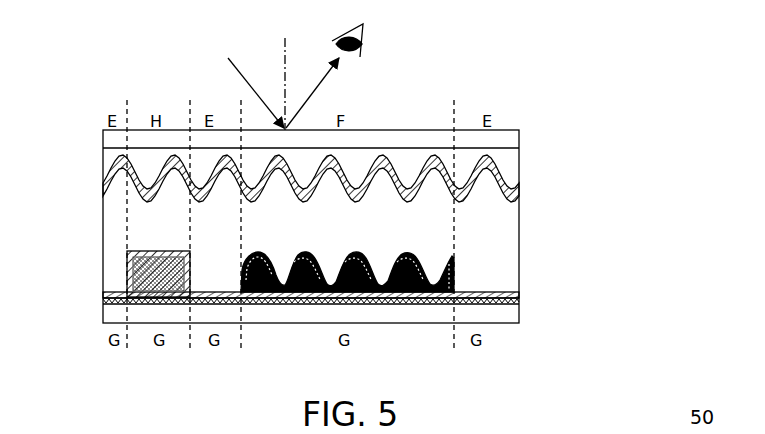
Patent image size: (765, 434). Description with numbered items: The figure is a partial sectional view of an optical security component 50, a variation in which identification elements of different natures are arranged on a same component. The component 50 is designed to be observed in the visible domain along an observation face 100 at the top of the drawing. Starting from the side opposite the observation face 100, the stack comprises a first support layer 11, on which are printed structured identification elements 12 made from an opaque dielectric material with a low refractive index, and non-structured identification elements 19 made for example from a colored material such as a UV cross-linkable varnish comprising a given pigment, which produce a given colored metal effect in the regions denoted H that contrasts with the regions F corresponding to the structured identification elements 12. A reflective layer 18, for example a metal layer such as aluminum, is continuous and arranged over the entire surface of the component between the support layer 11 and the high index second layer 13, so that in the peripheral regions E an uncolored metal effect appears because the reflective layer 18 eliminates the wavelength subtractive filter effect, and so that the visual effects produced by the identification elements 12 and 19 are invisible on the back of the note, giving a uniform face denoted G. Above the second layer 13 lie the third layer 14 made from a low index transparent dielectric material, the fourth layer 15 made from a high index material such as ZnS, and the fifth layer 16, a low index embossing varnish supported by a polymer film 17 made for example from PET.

The observation face 100 is at (400, 130).
The film 17 is at (508, 140).
The fifth layer 16 is at (508, 167).
The fourth layer 15 is at (519, 187).
The third layer 14 is at (510, 228).
The second layer 13 is at (520, 298).
The reflective layer 18 is at (258, 304).
The first support layer 11 is at (487, 312).
The identification elements 12 is at (401, 292).
The non-structured identification elements 19 is at (131, 285).
The component 50 is at (605, 190).